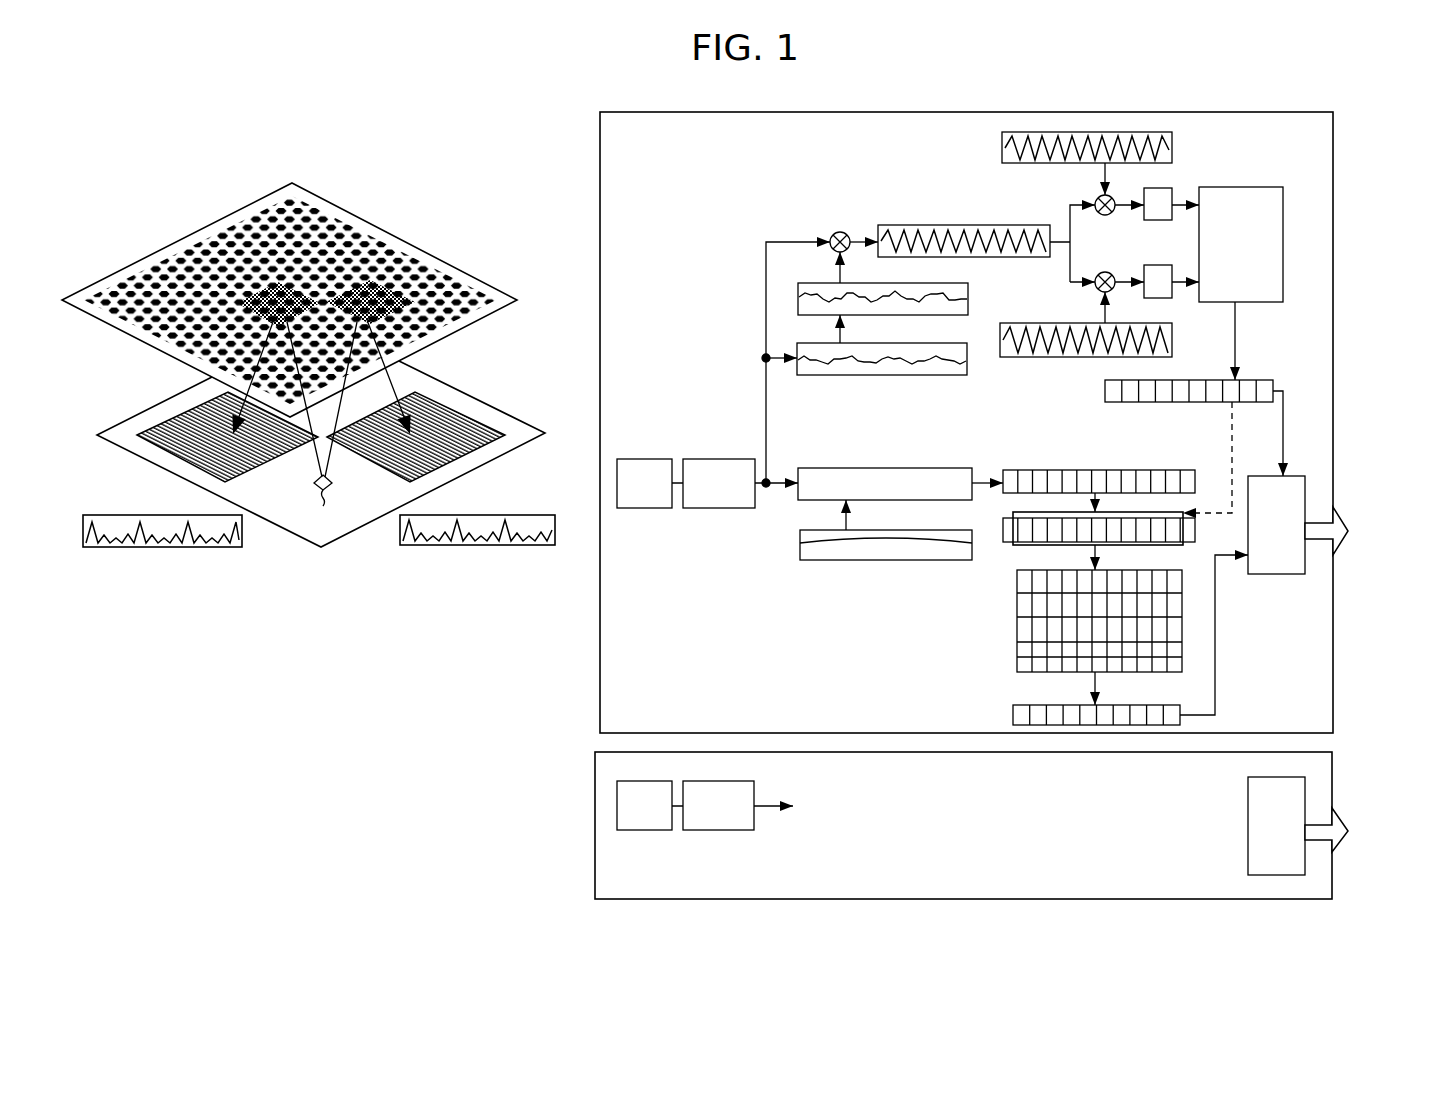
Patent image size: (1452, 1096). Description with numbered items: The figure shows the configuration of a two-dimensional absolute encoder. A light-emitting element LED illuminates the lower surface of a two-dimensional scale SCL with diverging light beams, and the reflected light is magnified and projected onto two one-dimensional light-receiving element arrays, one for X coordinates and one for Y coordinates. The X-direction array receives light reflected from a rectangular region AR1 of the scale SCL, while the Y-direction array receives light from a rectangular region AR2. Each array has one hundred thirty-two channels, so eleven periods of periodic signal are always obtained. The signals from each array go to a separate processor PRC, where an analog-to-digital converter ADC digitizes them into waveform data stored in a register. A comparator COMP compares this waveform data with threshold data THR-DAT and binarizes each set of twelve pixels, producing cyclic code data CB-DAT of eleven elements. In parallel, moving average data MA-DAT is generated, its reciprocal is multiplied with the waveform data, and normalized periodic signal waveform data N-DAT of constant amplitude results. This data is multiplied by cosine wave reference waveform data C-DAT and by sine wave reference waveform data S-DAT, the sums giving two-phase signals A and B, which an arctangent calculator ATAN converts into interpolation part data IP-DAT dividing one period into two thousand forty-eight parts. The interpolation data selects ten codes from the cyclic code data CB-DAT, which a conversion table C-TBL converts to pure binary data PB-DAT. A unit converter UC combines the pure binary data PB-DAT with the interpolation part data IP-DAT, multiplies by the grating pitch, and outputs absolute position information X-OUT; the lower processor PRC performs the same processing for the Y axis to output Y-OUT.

The two-dimensional scale SCL is at (377, 233).
The rectangular region AR1 is at (403, 288).
The rectangular region AR2 is at (257, 283).
The light-emitting element LED is at (320, 506).
The processor PRC is at (1371, 766).
The analog-to-digital converter ADC is at (650, 644).
The comparator COMP is at (900, 484).
The threshold data THR-DAT is at (886, 547).
The moving average data MA-DAT is at (882, 361).
The periodic signal waveform data N-DAT is at (962, 243).
The cosine wave reference waveform data C-DAT is at (1087, 163).
The sine wave reference waveform data S-DAT is at (1084, 324).
The arctangent calculator ATAN is at (1189, 279).
The interpolation part data IP-DAT is at (1196, 449).
The cyclic code data CB-DAT is at (1099, 505).
The conversion table C-TBL is at (1064, 637).
The pure binary data PB-DAT is at (1130, 637).
The unit converter UC is at (1276, 675).
The absolute position information X-OUT is at (1356, 531).
The absolute position information Y-OUT is at (1357, 830).